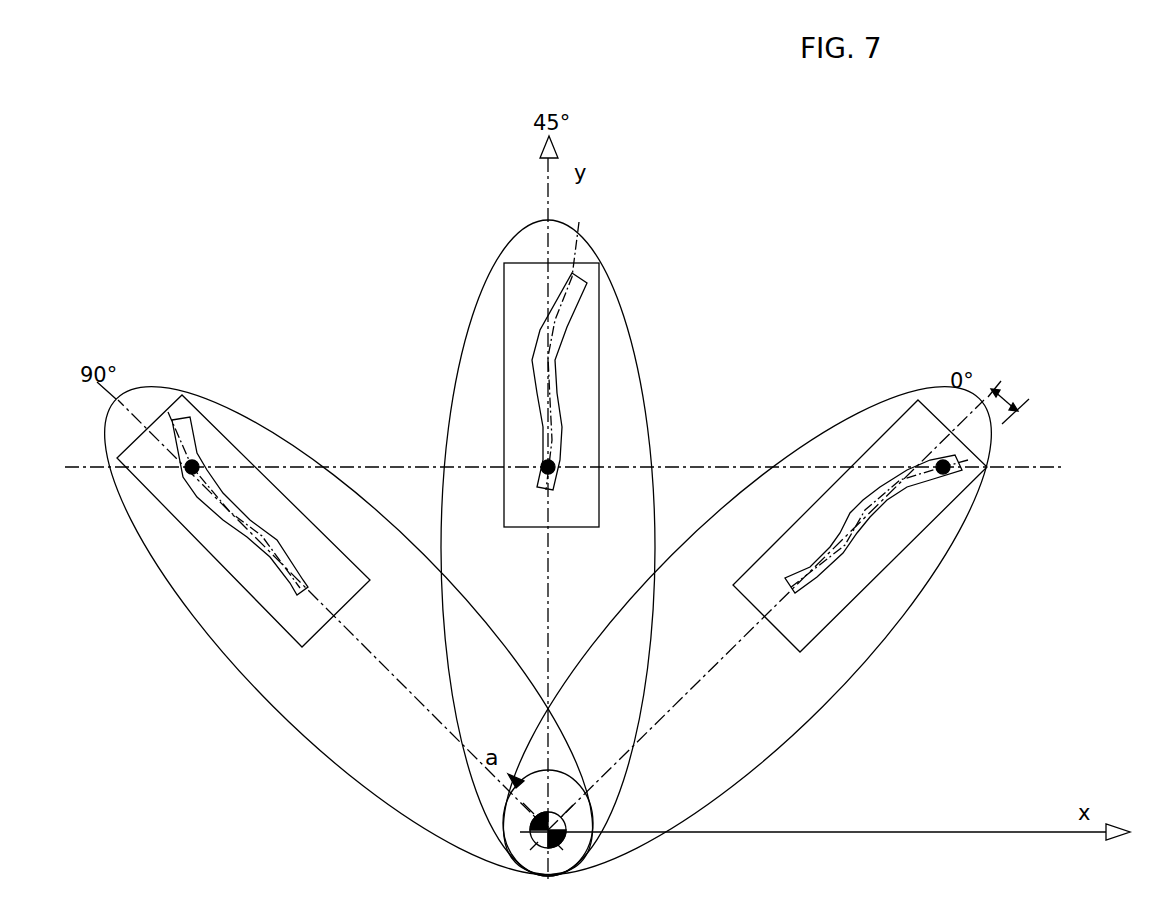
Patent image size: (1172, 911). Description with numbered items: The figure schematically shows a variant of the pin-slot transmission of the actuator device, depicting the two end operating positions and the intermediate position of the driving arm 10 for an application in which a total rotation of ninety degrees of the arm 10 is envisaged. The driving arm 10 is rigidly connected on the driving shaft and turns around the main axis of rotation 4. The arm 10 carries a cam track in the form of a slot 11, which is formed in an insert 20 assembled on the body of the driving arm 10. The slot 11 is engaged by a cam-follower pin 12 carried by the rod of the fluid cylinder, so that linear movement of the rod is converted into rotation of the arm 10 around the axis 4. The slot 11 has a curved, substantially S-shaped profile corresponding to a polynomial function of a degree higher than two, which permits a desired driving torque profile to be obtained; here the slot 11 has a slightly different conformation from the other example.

The axis of rotation 4 is at (567, 835).
The driving arm 10 is at (648, 385).
The slot 11 is at (538, 390).
The cam-follower pin 12 is at (545, 463).
The insert 20 is at (592, 270).